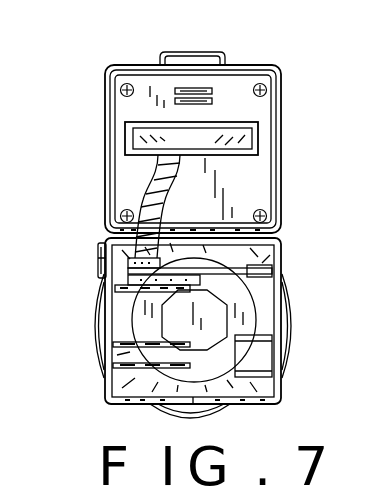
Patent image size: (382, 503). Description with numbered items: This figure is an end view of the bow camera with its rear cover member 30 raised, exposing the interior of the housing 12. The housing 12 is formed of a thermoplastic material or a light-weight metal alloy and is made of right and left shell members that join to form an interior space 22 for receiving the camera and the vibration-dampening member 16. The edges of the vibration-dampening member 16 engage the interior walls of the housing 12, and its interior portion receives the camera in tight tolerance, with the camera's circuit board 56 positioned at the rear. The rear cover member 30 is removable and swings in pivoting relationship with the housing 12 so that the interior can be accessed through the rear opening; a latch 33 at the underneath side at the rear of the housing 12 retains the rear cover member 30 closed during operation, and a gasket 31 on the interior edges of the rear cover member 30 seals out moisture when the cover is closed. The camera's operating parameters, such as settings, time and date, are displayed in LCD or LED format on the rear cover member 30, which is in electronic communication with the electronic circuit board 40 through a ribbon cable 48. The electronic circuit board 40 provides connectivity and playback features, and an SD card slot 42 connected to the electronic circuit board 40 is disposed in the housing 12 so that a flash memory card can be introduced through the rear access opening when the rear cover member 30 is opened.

The housing 12 is at (96, 333).
The vibration-dampening member 16 is at (133, 303).
The interior space 22 is at (265, 299).
The rear cover member 30 is at (250, 173).
The gasket 31 is at (234, 73).
The latch 33 is at (218, 407).
The electronic circuit board 40 is at (270, 238).
The SD card slot 42 is at (106, 283).
The ribbon cable 48 is at (162, 187).
The circuit board 56 is at (218, 320).